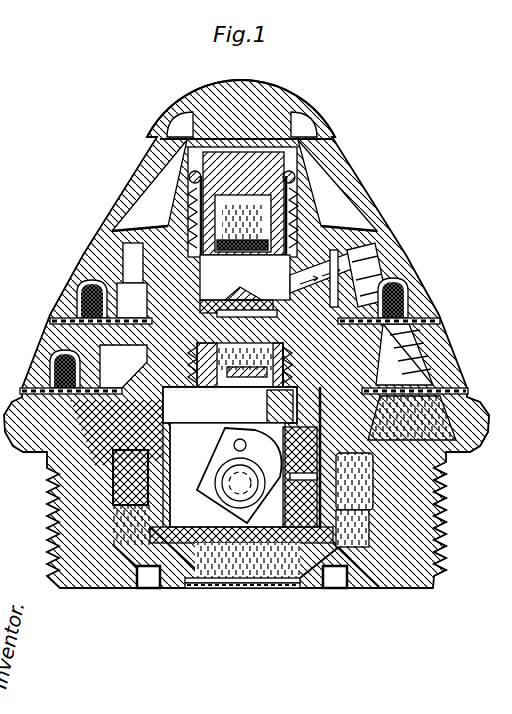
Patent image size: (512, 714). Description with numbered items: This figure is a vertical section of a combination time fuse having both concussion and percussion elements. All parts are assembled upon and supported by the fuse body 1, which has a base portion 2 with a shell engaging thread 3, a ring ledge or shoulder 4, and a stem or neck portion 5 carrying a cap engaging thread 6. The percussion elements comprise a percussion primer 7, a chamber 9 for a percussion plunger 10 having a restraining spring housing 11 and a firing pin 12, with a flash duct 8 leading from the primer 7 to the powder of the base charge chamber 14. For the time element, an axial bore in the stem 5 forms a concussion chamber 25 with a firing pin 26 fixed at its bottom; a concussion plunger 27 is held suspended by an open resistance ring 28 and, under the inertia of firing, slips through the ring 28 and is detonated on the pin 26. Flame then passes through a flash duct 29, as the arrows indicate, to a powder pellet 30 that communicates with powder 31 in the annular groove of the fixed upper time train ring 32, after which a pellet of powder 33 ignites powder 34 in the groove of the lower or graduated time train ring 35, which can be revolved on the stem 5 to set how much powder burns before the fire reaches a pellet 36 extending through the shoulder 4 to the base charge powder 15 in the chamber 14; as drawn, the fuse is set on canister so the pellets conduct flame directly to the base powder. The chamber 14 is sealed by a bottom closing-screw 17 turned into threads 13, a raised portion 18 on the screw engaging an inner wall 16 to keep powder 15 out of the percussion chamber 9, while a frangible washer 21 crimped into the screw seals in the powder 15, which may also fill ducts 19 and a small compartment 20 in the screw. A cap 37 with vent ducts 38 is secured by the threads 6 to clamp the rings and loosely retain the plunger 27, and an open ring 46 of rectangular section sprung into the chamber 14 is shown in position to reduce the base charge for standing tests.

The fuse body 1 is at (400, 582).
The base portion 2 is at (430, 587).
The shell engaging thread 3 is at (437, 520).
The ring ledge or shoulder 4 is at (479, 413).
The stem or neck portion 5 is at (242, 275).
The cap engaging thread 6 is at (248, 218).
The percussion primer 7 is at (283, 352).
The flash duct 8 is at (168, 375).
The chamber 9 is at (316, 405).
The percussion plunger 10 is at (232, 475).
The restraining spring housing 11 is at (310, 372).
The firing pin 12 is at (232, 437).
The threads 13 is at (372, 558).
The base charge chamber 14 is at (373, 485).
The base charge powder 15 is at (150, 483).
The inner wall 16 is at (155, 503).
The bottom closing-screw 17 is at (313, 586).
The raised portion 18 is at (170, 528).
The ducts 19 is at (242, 577).
The small compartment 20 is at (225, 580).
The frangible washer 21 is at (253, 580).
The concussion chamber 25 is at (280, 285).
The firing pin 26 is at (245, 277).
The concussion plunger 27 is at (243, 203).
The open resistance ring 28 is at (202, 177).
The flash duct 29 is at (322, 272).
The powder pellet 30 is at (370, 268).
The powder 31 is at (92, 280).
The upper time train ring 32 is at (415, 316).
The pellet of powder 33 is at (430, 340).
The powder 34 is at (461, 346).
The lower or graduated time train ring 35 is at (447, 388).
The pellet 36 is at (412, 420).
The cap 37 is at (288, 103).
The vent ducts 38 is at (322, 170).
The open ring 46 is at (130, 477).